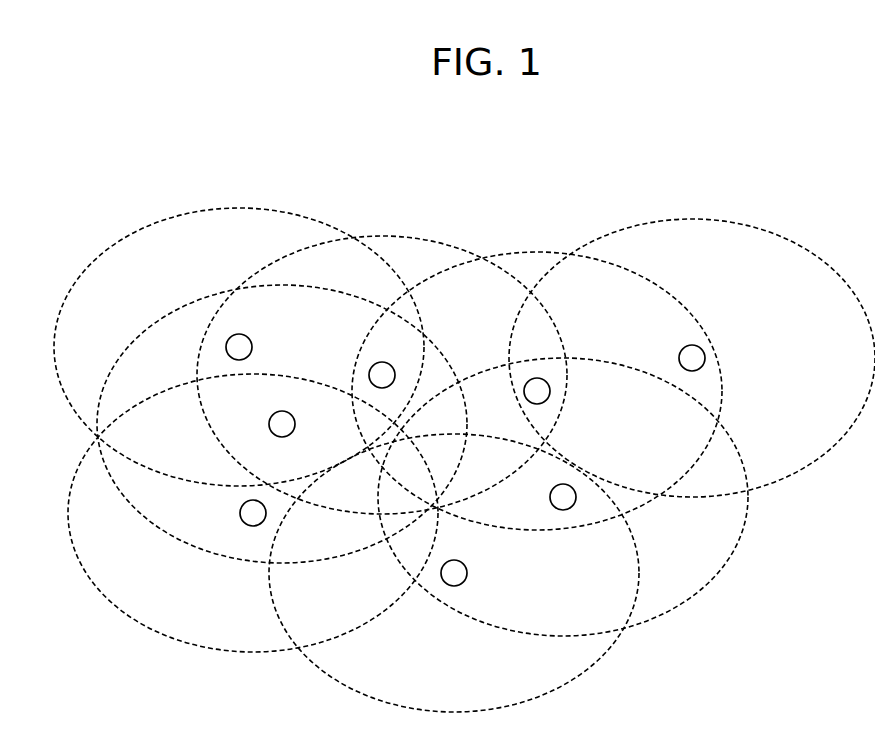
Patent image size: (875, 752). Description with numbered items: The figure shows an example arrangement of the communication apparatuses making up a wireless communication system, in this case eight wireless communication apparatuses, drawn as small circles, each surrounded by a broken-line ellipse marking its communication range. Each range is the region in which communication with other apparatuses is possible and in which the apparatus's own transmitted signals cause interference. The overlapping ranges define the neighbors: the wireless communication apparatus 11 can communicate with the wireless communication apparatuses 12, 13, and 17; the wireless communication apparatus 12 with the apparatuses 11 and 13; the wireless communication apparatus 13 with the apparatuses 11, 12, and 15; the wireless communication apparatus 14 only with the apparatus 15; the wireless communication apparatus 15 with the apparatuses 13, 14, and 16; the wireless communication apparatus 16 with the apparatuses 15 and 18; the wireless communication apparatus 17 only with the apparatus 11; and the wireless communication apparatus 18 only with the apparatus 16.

The wireless communication apparatus 11 is at (295, 424).
The wireless communication apparatus 12 is at (252, 347).
The wireless communication apparatus 13 is at (382, 362).
The wireless communication apparatus 14 is at (679, 358).
The wireless communication apparatus 15 is at (550, 391).
The wireless communication apparatus 16 is at (550, 497).
The wireless communication apparatus 17 is at (240, 513).
The wireless communication apparatus 18 is at (467, 573).